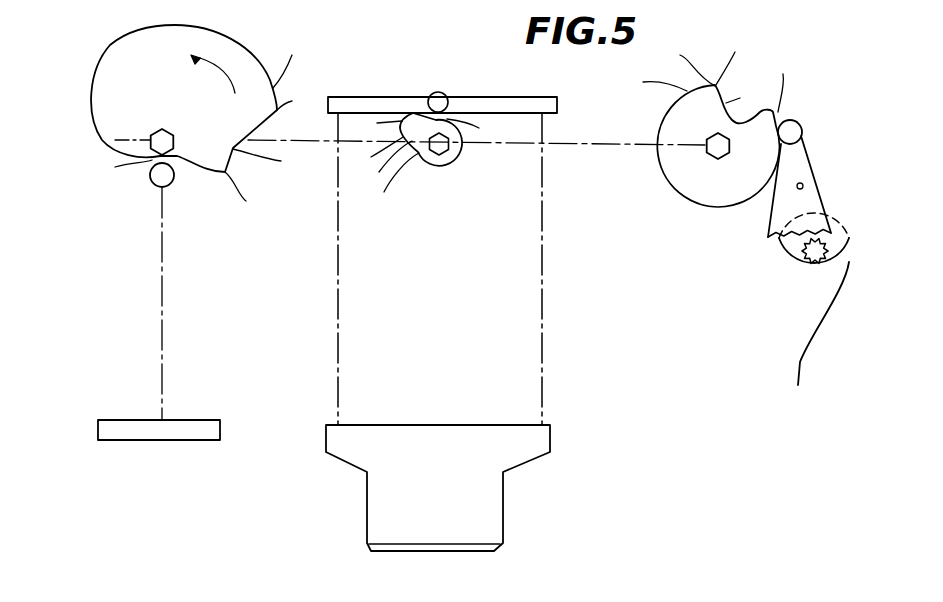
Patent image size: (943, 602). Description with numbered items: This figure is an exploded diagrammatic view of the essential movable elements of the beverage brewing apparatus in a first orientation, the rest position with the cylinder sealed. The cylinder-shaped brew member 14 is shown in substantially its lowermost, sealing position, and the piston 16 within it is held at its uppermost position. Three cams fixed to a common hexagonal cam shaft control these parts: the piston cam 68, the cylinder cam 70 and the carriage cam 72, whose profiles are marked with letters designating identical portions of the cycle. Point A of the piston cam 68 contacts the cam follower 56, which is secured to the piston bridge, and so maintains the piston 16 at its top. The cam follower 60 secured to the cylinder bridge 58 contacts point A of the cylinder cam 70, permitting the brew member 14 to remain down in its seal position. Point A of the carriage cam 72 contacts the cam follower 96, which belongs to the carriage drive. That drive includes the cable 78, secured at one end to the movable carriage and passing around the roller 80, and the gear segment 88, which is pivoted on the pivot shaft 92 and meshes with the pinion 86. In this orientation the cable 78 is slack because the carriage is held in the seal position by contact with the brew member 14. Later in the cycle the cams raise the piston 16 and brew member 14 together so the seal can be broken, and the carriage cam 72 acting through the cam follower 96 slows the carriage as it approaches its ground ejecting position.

The brew member 14 is at (367, 497).
The piston 16 is at (127, 428).
The cam follower 56 is at (152, 181).
The cylinder bridge 58 is at (368, 102).
The cam follower 60 is at (447, 90).
The piston cam 68 is at (100, 83).
The cylinder cam 70 is at (432, 167).
The carriage cam 72 is at (703, 187).
The cable 78 is at (797, 363).
The roller 80 is at (803, 277).
The pinion 86 is at (803, 258).
The gear segment 88 is at (808, 204).
The pivot shaft 92 is at (804, 185).
The cam follower 96 is at (797, 121).